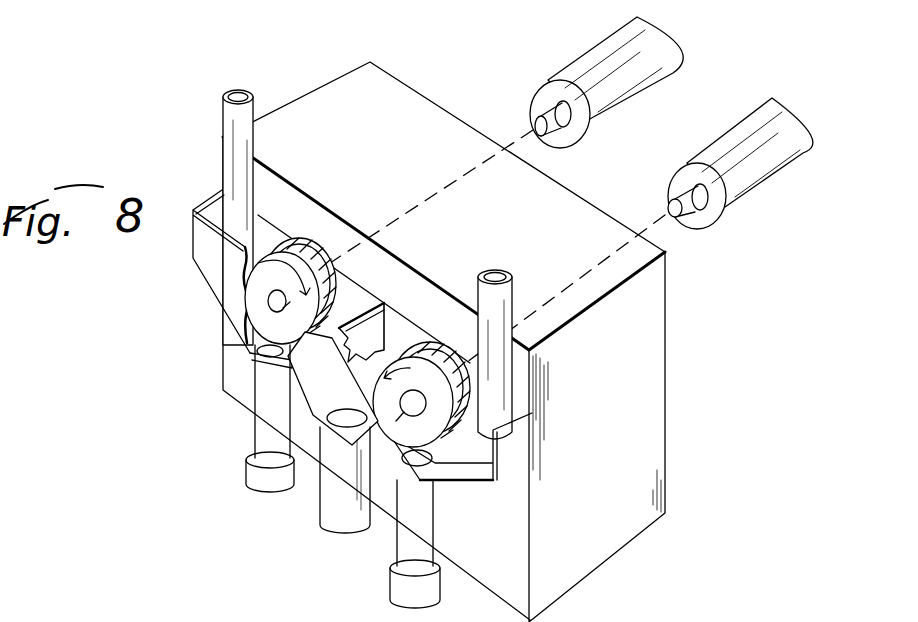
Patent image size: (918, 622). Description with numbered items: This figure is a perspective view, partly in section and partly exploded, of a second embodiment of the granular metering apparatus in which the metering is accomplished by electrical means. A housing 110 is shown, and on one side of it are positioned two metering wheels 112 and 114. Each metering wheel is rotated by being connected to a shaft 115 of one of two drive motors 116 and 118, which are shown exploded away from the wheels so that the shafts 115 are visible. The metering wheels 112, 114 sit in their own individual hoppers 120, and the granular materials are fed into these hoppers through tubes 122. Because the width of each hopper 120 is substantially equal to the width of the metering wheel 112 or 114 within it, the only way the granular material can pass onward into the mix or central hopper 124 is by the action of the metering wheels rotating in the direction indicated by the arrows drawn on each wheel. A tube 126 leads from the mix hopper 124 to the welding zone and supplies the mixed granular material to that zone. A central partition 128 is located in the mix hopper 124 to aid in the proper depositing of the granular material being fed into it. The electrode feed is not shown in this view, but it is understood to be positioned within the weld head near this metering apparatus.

The housing 110 is at (625, 366).
The metering wheel 112 is at (412, 342).
The metering wheel 114 is at (257, 316).
The shaft 115 is at (527, 123).
The drive motor 116 is at (787, 105).
The drive motor 118 is at (590, 53).
The hopper 120 is at (202, 263).
The tube 122 is at (228, 122).
The mix hopper 124 is at (355, 373).
The tube 126 is at (328, 503).
The central partition 128 is at (385, 318).